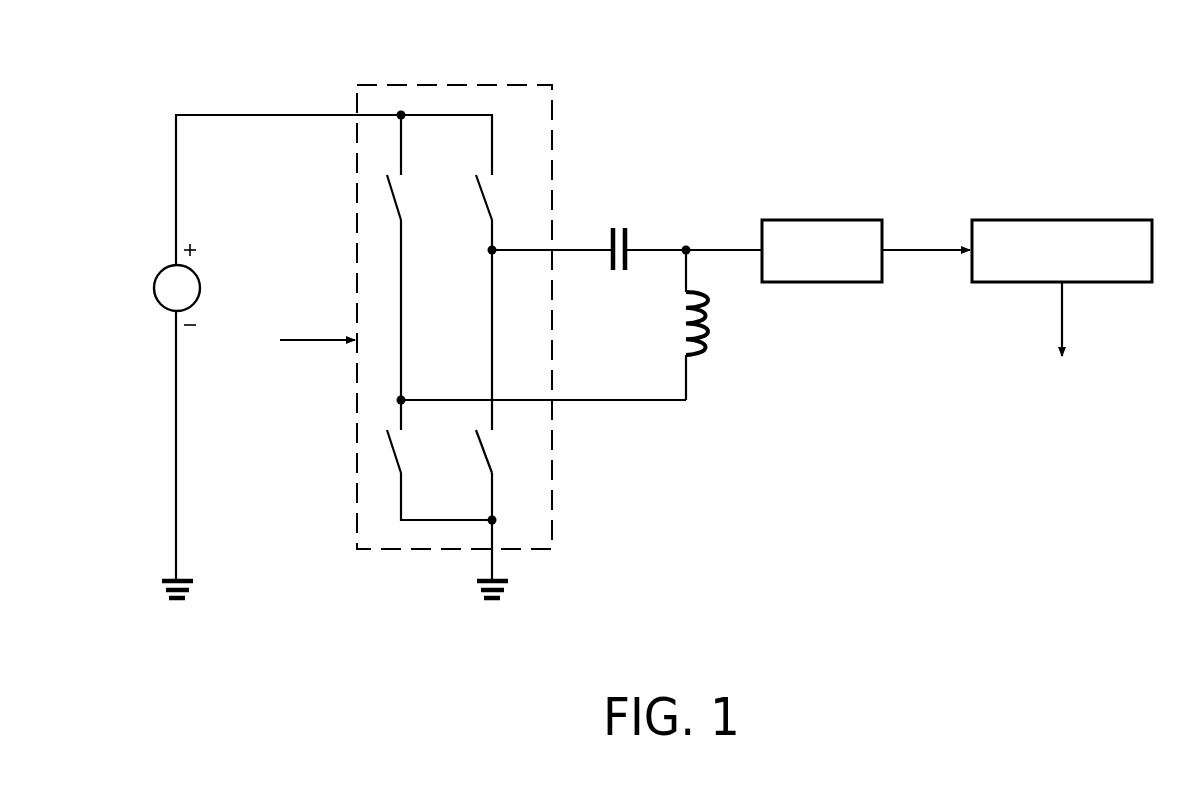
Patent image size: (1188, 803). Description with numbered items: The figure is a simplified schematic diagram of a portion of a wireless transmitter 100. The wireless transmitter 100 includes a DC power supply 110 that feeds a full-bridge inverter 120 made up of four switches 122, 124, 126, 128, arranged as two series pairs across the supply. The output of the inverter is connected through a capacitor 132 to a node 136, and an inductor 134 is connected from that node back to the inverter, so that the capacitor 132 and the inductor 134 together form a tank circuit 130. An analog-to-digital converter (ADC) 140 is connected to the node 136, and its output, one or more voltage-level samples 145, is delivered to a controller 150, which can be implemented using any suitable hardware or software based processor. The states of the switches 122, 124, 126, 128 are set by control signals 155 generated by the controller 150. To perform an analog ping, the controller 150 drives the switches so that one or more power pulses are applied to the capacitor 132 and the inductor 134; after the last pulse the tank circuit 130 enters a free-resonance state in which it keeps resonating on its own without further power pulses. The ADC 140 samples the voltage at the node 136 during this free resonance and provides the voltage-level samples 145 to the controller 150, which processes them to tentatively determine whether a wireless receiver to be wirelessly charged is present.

The wireless transmitter 100 is at (872, 715).
The DC power supply 110 is at (154, 290).
The full-bridge inverter 120 is at (497, 85).
The switch 122 is at (411, 194).
The switch 124 is at (497, 195).
The switch 126 is at (411, 450).
The switch 128 is at (500, 451).
The tank circuit 130 is at (693, 317).
The capacitor 132 is at (622, 228).
The inductor 134 is at (710, 332).
The node 136 is at (686, 240).
The analog-to-digital converter 140 is at (828, 220).
The voltage-level samples 145 is at (917, 250).
The controller 150 is at (1090, 220).
The control signals 155 is at (311, 340).